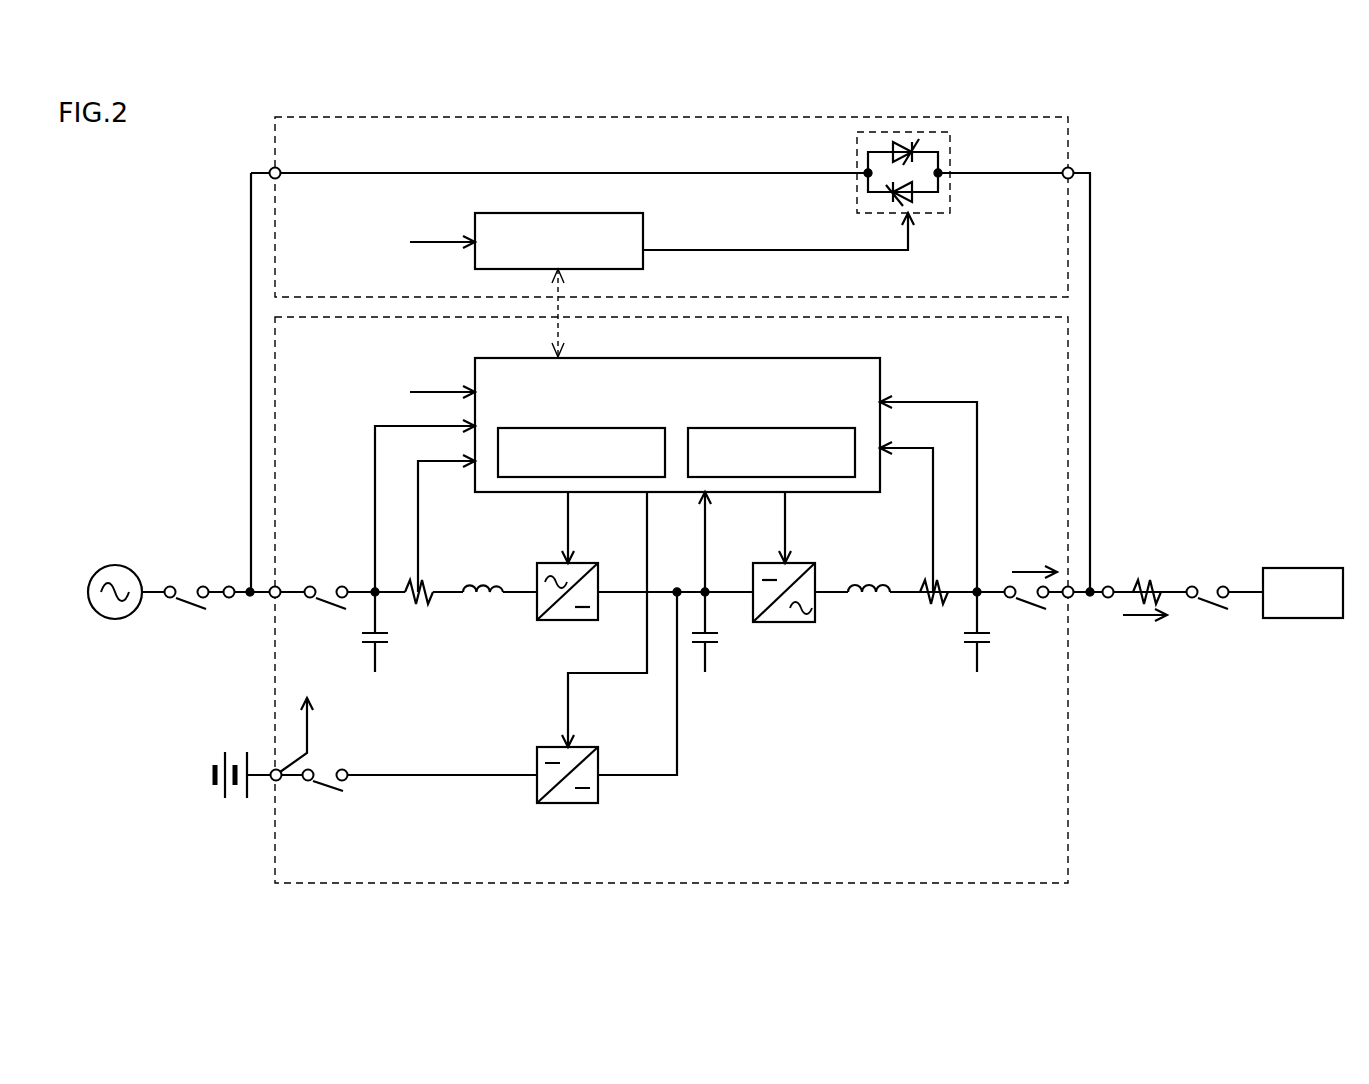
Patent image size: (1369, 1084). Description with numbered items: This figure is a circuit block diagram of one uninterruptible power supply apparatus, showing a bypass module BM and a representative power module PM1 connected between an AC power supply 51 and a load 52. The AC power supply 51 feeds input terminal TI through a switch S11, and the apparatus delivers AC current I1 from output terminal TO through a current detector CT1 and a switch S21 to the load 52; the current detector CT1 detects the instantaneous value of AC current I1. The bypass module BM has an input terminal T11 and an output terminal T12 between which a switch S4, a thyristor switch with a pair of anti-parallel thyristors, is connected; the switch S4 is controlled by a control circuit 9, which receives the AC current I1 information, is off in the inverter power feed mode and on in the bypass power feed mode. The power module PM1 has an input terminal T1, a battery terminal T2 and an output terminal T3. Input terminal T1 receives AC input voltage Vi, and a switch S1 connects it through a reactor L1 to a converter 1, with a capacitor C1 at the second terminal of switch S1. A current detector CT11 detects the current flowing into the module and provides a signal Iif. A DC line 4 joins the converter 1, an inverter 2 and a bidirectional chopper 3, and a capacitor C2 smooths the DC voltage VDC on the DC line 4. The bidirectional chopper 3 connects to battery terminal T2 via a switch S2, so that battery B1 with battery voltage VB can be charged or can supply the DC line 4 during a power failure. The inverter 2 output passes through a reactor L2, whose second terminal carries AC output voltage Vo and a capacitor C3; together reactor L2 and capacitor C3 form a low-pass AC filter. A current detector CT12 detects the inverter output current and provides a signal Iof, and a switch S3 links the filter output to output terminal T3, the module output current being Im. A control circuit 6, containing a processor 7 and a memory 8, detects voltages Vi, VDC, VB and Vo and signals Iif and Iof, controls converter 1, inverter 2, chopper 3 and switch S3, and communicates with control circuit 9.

The converter 1 is at (596, 565).
The inverter 2 is at (812, 565).
The bidirectional chopper 3 is at (582, 747).
The DC line 4 is at (728, 588).
The control circuit 6 is at (845, 358).
The processor 7 is at (630, 428).
The memory 8 is at (820, 428).
The control circuit 9 is at (605, 213).
The AC power supply 51 is at (115, 565).
The load 52 is at (1290, 568).
The bypass module BM is at (1007, 117).
The power module PM1 is at (1003, 885).
The switch S4 is at (935, 213).
The switch S11 is at (190, 602).
The switch S1 is at (331, 605).
The switch S2 is at (329, 792).
The switch S3 is at (1031, 607).
The switch S21 is at (1212, 607).
The input terminal TI is at (226, 584).
The output terminal TO is at (1108, 600).
The input terminal T1 is at (273, 598).
The battery terminal T2 is at (274, 781).
The output terminal T3 is at (1070, 600).
The input terminal T11 is at (271, 168).
The output terminal T12 is at (1075, 168).
The battery B1 is at (233, 750).
The capacitor C1 is at (380, 648).
The capacitor C2 is at (713, 650).
The capacitor C3 is at (982, 650).
The current detector CT11 is at (418, 604).
The current detector CT12 is at (933, 604).
The current detector CT1 is at (1145, 582).
The reactor L1 is at (485, 600).
The reactor L2 is at (870, 600).
The battery voltage VB is at (348, 540).
The AC input voltage Vi is at (356, 518).
The signal Iif is at (403, 518).
The DC voltage VDC is at (739, 521).
The signal Iof is at (911, 518).
The AC output voltage Vo is at (1000, 518).
The output current Im is at (1032, 555).
The AC current I1 is at (770, 440).